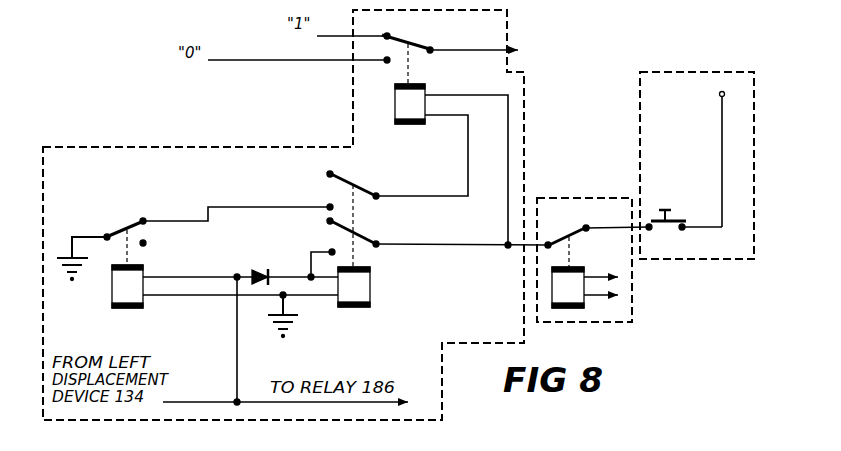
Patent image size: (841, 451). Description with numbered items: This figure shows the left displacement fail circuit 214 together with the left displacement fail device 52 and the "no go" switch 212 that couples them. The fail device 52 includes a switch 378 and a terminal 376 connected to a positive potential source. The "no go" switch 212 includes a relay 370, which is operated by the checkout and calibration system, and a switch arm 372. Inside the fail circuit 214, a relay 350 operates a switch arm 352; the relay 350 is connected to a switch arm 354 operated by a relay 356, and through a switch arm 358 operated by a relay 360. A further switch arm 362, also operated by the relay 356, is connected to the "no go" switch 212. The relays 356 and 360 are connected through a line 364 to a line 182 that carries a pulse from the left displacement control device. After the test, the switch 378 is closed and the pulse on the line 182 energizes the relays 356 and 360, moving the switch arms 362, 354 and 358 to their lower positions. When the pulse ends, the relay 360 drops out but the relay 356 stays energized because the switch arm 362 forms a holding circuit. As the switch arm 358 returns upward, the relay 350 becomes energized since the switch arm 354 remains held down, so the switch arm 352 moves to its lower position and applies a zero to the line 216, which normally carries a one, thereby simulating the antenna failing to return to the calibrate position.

The left displacement fail device 52 is at (711, 72).
The line 182 is at (198, 401).
The "no go" switch 212 is at (607, 177).
The left displacement fail circuit 214 is at (158, 146).
The line 216 is at (483, 30).
The relay 350 is at (391, 106).
The switch arm 352 is at (420, 50).
The switch arm 354 is at (347, 179).
The relay 356 is at (373, 283).
The switch arm 358 is at (136, 223).
The relay 360 is at (112, 284).
The switch arm 362 is at (358, 233).
The line 364 is at (237, 322).
The relay 370 is at (585, 268).
The switch arm 372 is at (560, 237).
The terminal 376 is at (720, 94).
The switch 378 is at (672, 220).